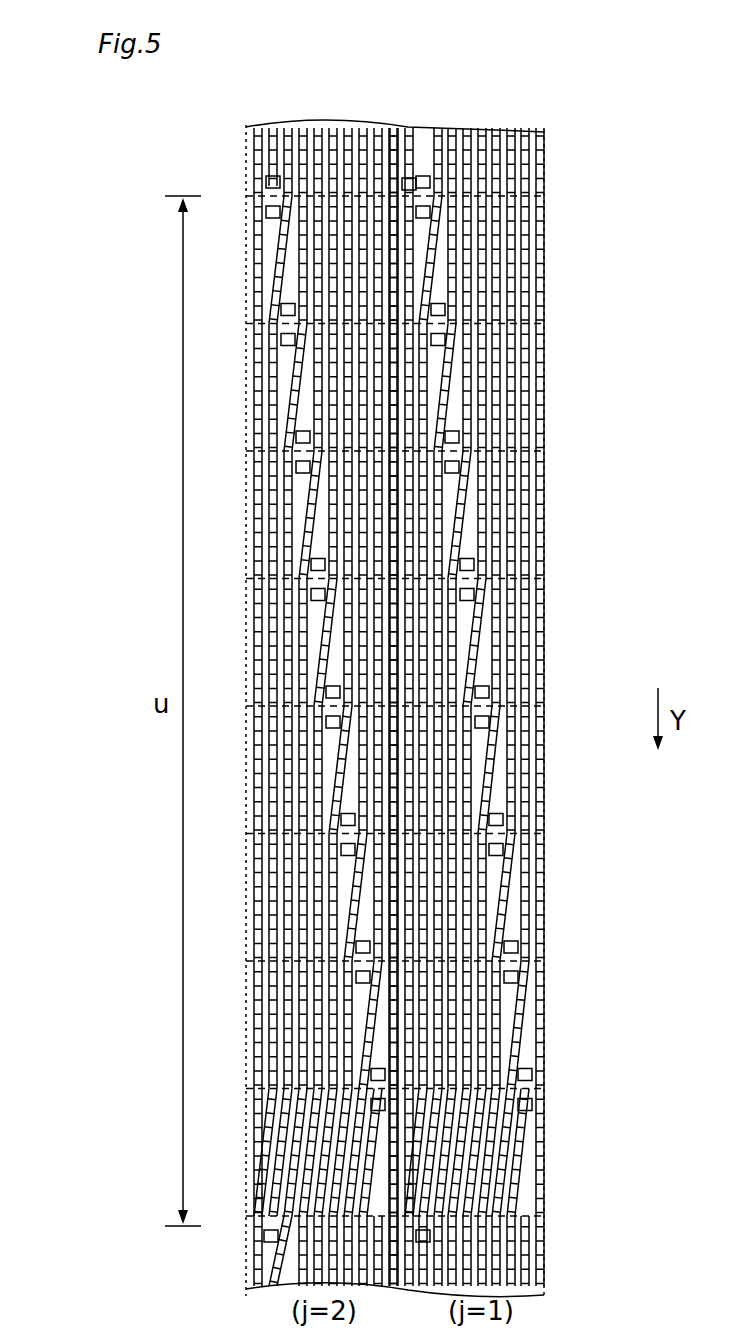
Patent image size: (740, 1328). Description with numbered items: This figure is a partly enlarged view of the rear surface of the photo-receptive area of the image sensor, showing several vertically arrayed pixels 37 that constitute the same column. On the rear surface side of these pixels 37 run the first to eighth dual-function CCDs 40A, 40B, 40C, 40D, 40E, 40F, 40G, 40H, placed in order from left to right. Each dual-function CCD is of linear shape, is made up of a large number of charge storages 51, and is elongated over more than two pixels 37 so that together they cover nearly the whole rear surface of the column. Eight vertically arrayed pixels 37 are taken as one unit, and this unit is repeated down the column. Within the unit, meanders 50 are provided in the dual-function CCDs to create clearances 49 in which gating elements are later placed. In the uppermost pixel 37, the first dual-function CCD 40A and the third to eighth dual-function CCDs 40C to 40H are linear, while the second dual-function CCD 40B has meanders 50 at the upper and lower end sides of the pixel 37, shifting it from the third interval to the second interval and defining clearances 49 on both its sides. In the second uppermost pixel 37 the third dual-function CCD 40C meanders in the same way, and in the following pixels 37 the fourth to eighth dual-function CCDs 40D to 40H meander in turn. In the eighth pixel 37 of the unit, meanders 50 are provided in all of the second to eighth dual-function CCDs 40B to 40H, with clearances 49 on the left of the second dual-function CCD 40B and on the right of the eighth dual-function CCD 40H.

The pixel 37 is at (540, 1240).
The first dual-function CCD 40A is at (258, 116).
The second dual-function CCD 40B is at (290, 114).
The third dual-function CCD 40C is at (303, 114).
The fourth dual-function CCD 40D is at (315, 114).
The fifth dual-function CCD 40E is at (447, 152).
The sixth dual-function CCD 40F is at (458, 188).
The seventh dual-function CCD 40G is at (470, 222).
The eighth dual-function CCD 40H is at (482, 255).
The clearance 49 is at (252, 206).
The meander 50 is at (268, 170).
The charge storage 51 is at (540, 316).